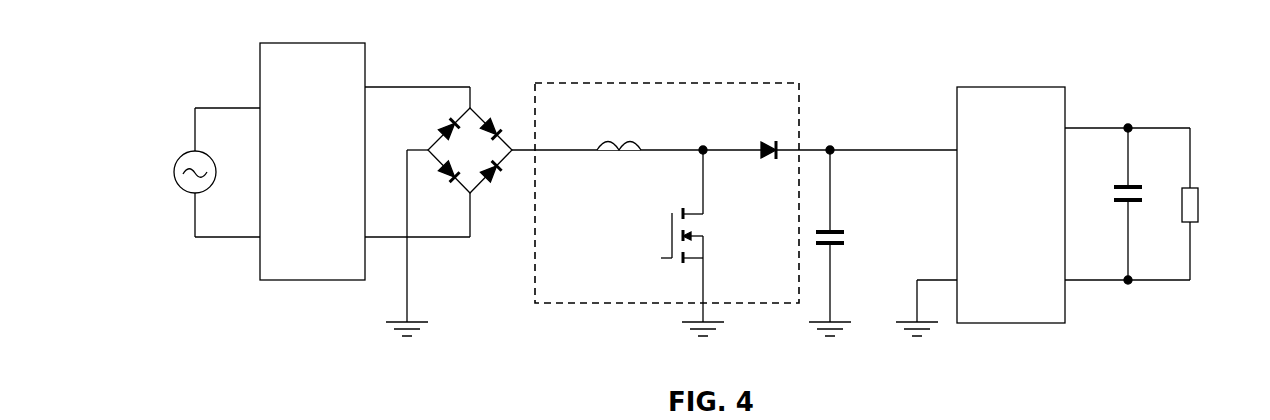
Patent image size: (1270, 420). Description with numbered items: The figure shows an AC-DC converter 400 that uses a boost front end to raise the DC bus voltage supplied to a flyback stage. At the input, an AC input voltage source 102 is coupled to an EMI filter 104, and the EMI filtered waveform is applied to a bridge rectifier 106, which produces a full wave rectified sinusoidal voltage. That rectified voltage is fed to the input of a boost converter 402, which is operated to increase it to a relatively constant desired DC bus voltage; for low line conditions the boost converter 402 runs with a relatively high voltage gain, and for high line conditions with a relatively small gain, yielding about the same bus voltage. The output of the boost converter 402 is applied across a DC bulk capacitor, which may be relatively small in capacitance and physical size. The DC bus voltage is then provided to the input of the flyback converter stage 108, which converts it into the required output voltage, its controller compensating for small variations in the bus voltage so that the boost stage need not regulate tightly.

The AC-DC converter 400 is at (622, 46).
The AC input voltage source 102 is at (183, 188).
The EMI filter 104 is at (290, 43).
The bridge rectifier 106 is at (493, 110).
The boost converter 402 is at (731, 83).
The flyback converter stage 108 is at (1010, 87).